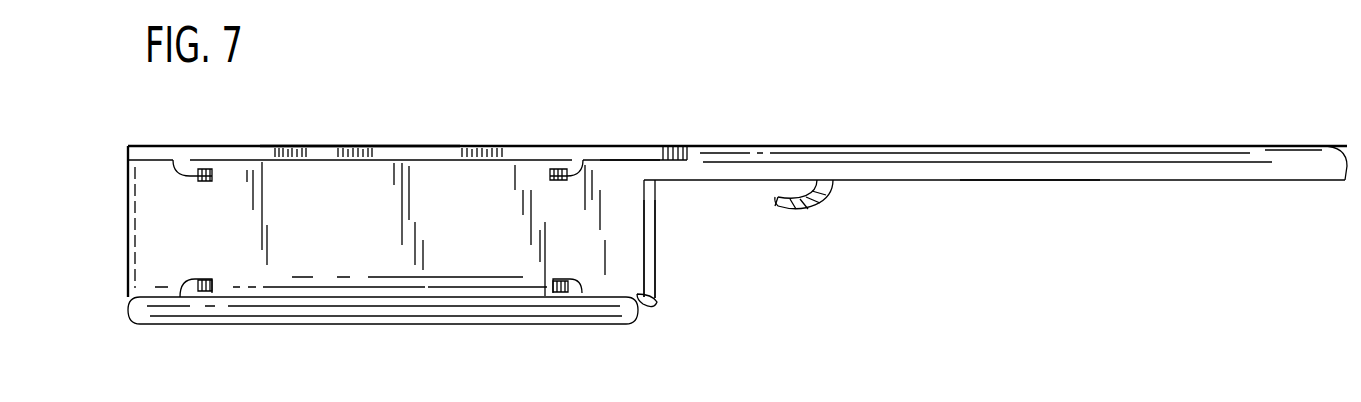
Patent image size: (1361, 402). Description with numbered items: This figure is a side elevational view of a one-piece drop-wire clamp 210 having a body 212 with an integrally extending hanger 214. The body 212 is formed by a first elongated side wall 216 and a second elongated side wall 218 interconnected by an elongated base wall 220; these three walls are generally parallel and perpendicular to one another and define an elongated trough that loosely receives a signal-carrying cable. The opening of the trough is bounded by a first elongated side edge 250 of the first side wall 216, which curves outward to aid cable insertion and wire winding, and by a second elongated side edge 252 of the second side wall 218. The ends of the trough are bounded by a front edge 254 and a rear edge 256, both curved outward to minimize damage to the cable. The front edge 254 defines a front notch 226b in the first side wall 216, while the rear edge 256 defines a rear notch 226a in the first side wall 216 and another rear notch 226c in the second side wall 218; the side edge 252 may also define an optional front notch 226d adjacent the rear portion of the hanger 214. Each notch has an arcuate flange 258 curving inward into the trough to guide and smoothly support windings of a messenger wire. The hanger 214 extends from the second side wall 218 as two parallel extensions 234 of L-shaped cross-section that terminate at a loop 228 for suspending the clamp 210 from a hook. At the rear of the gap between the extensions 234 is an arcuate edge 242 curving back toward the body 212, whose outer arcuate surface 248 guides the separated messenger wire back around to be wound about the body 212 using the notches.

The one-piece clamp 210 is at (815, 128).
The body 212 is at (543, 147).
The hanger 214 is at (953, 147).
The first elongated side wall 216 is at (392, 297).
The second elongated side wall 218 is at (394, 145).
The elongated base wall 220 is at (342, 213).
The rear notch 226a is at (128, 310).
The front notch 226b is at (656, 306).
The rear notch 226c is at (126, 152).
The front notch 226d is at (628, 162).
The loop 228 is at (1349, 163).
The extensions 234 is at (1003, 181).
The arcuate edge 242 is at (842, 181).
The outer arcuate surface 248 is at (820, 208).
The first elongated side edge 250 is at (470, 317).
The second elongated side edge 252 is at (305, 146).
The front edge 254 is at (656, 254).
The rear edge 256 is at (127, 238).
The arcuate flange 258 is at (190, 177).